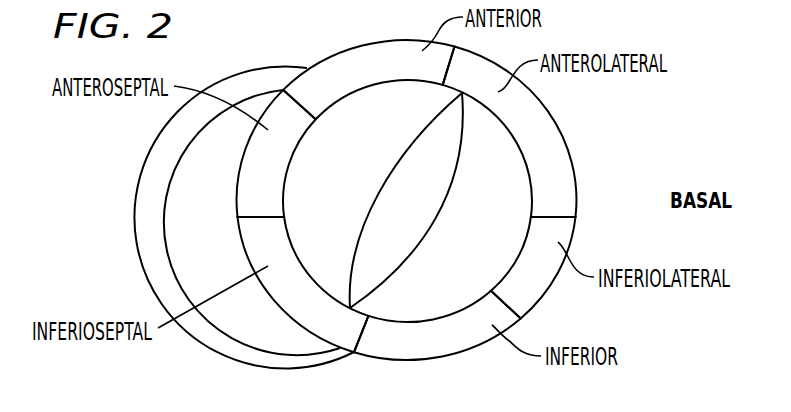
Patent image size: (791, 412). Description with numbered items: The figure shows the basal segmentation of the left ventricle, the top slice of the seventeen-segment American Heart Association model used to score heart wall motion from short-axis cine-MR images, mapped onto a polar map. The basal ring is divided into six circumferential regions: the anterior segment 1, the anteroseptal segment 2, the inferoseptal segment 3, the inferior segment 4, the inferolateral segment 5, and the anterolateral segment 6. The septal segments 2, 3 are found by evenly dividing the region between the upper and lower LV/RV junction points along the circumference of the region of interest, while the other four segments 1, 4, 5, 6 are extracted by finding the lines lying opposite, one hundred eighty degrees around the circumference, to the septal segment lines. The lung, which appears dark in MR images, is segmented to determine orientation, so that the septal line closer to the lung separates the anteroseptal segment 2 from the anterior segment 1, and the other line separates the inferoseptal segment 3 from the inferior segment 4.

The anterior basal segment 1 is at (368, 79).
The anteroseptal basal segment 2 is at (276, 153).
The inferoseptal basal segment 3 is at (303, 284).
The inferior basal segment 4 is at (437, 325).
The inferolateral basal segment 5 is at (533, 268).
The anterolateral basal segment 6 is at (510, 132).